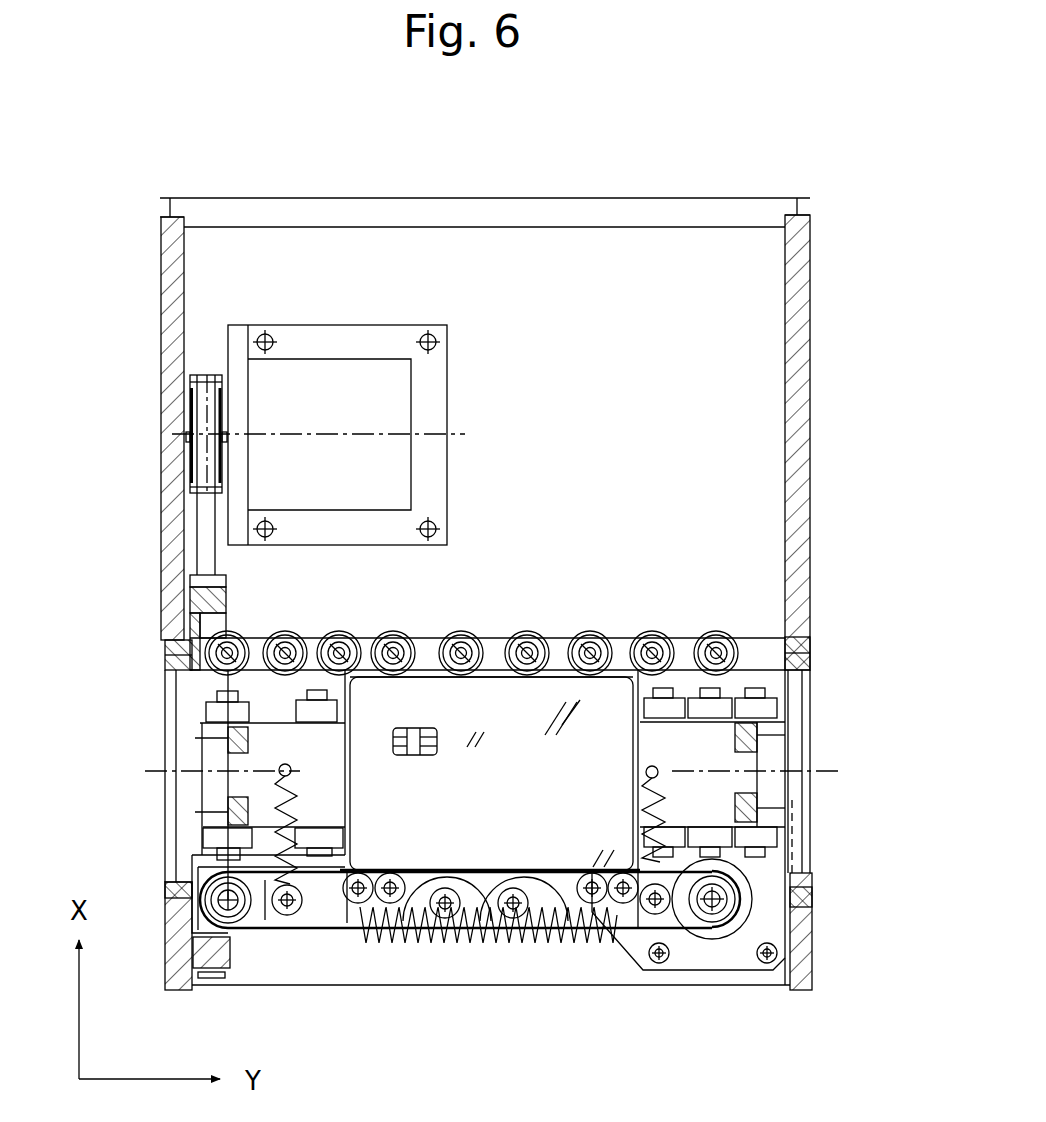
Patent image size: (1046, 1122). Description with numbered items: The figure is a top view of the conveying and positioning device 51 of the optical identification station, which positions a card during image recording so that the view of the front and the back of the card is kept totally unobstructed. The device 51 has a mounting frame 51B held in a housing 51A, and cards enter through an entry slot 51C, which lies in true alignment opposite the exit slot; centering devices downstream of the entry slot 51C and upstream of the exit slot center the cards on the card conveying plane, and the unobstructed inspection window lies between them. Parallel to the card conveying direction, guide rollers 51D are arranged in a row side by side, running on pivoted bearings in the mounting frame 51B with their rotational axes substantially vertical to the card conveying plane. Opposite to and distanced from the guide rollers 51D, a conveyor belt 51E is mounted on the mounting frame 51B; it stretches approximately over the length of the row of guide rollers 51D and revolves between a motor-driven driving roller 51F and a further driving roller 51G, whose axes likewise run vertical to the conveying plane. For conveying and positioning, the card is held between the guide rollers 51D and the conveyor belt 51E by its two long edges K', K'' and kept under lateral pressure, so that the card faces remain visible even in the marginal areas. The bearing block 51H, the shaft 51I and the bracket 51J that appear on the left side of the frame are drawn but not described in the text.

The conveying and positioning device 51 is at (331, 196).
The housing 51A is at (814, 291).
The mounting frame 51B is at (494, 633).
The entry slot 51C is at (168, 718).
The guide rollers 51D is at (392, 632).
The conveyor belt 51E is at (322, 876).
The motor-driven driving roller 51F is at (700, 937).
The driving roller 51G is at (257, 934).
The bearing block 51H is at (197, 600).
The shaft 51I is at (200, 538).
The motor bracket 51J is at (400, 403).
The long edge of the card K' is at (491, 716).
The long edge of the card K'' is at (490, 953).